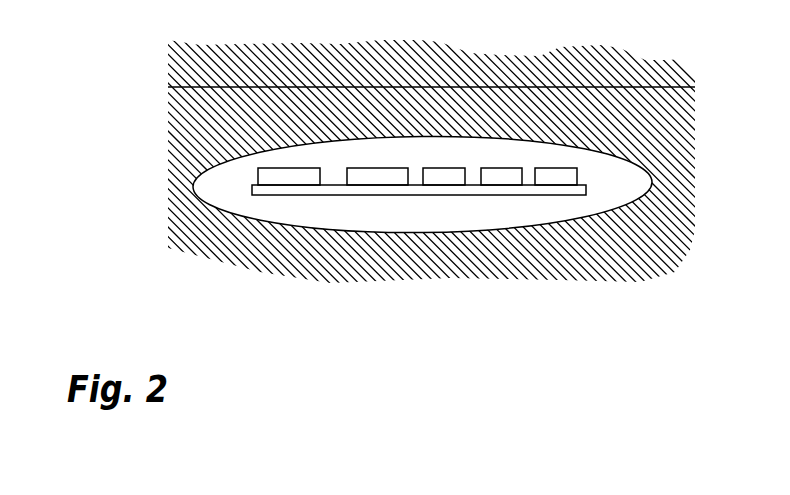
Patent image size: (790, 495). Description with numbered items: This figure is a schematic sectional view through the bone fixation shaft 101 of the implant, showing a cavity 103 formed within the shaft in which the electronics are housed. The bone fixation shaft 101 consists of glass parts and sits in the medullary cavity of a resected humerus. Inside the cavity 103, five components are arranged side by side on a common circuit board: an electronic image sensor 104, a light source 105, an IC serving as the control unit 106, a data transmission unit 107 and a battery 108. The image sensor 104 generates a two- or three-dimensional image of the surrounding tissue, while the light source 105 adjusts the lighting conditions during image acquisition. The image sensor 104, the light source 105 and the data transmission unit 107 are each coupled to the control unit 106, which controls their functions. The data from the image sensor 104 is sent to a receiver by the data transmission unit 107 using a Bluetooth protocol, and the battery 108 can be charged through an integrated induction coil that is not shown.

The bone fixation shaft 101 is at (208, 249).
The cavity 103 is at (203, 177).
The electronic image sensor 104 is at (287, 186).
The light source 105 is at (378, 186).
The control unit 106 is at (442, 186).
The data transmission unit 107 is at (506, 186).
The battery 108 is at (558, 186).